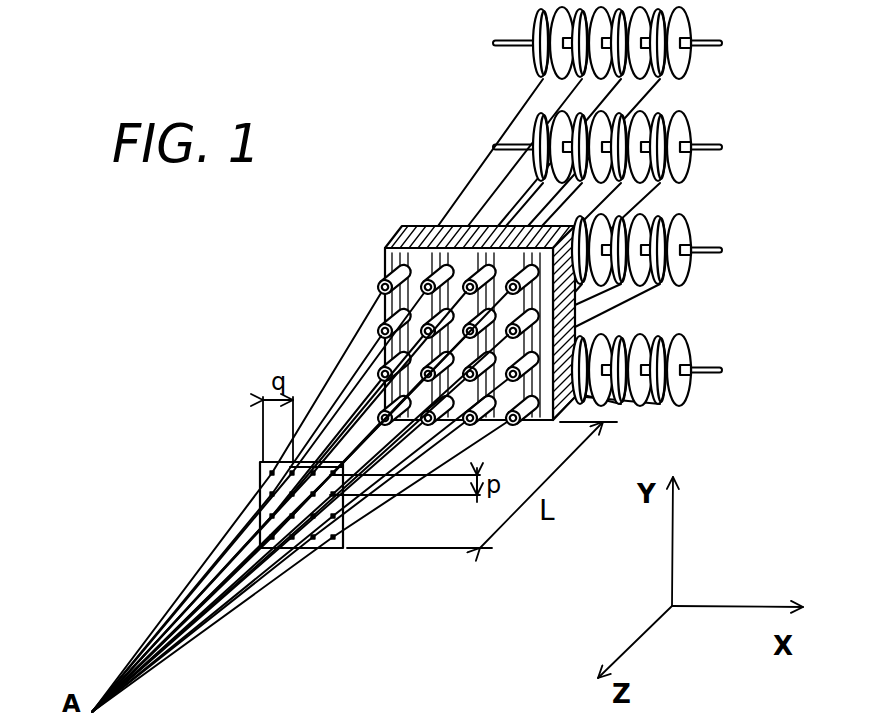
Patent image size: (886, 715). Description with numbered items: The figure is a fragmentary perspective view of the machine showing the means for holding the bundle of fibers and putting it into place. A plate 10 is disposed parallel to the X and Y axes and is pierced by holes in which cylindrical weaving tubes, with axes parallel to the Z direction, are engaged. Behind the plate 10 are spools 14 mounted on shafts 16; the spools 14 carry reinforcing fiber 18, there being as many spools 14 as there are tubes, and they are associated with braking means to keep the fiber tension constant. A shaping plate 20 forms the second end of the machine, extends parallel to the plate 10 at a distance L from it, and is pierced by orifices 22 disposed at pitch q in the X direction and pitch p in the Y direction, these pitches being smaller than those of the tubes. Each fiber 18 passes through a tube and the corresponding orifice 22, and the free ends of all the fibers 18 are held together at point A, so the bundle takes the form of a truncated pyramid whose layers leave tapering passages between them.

The plate 10 is at (388, 240).
The spools 14 is at (682, 130).
The shafts 16 is at (698, 250).
The reinforcing fiber 18 is at (472, 176).
The shaping plate 20 is at (332, 549).
The orifices 22 is at (262, 471).